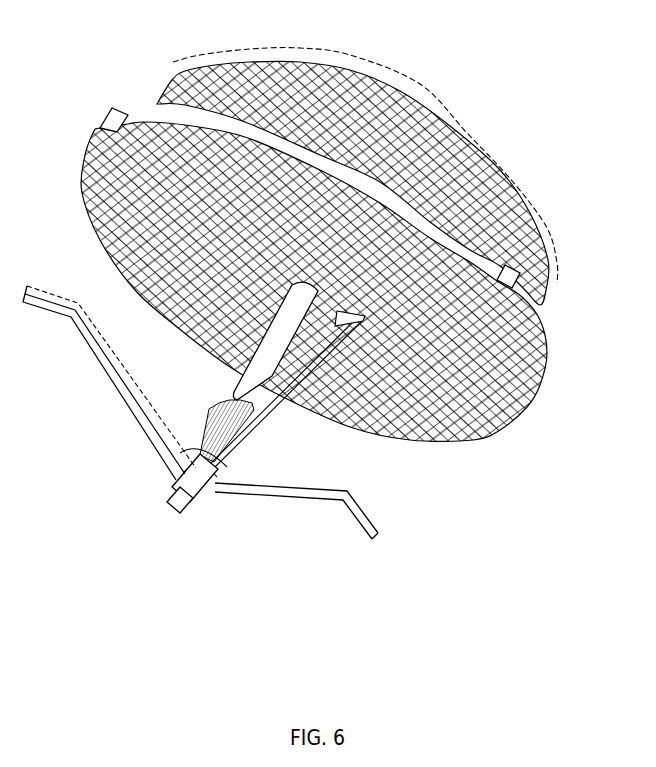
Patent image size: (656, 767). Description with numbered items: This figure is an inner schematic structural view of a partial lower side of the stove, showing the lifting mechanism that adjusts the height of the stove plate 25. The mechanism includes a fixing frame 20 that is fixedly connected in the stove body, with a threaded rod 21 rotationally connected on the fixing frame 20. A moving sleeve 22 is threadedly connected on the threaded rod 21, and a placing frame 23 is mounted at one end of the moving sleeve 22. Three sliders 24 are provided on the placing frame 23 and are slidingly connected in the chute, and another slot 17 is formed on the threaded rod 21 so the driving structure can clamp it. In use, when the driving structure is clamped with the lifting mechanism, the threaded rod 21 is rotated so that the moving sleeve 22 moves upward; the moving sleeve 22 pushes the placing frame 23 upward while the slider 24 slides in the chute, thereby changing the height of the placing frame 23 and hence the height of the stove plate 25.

The slot 17 is at (184, 507).
The fixing frame 20 is at (267, 490).
The threaded rod 21 is at (208, 433).
The moving sleeve 22 is at (271, 377).
The placing frame 23 is at (129, 125).
The slider 24 is at (517, 282).
The stove plate 25 is at (328, 78).